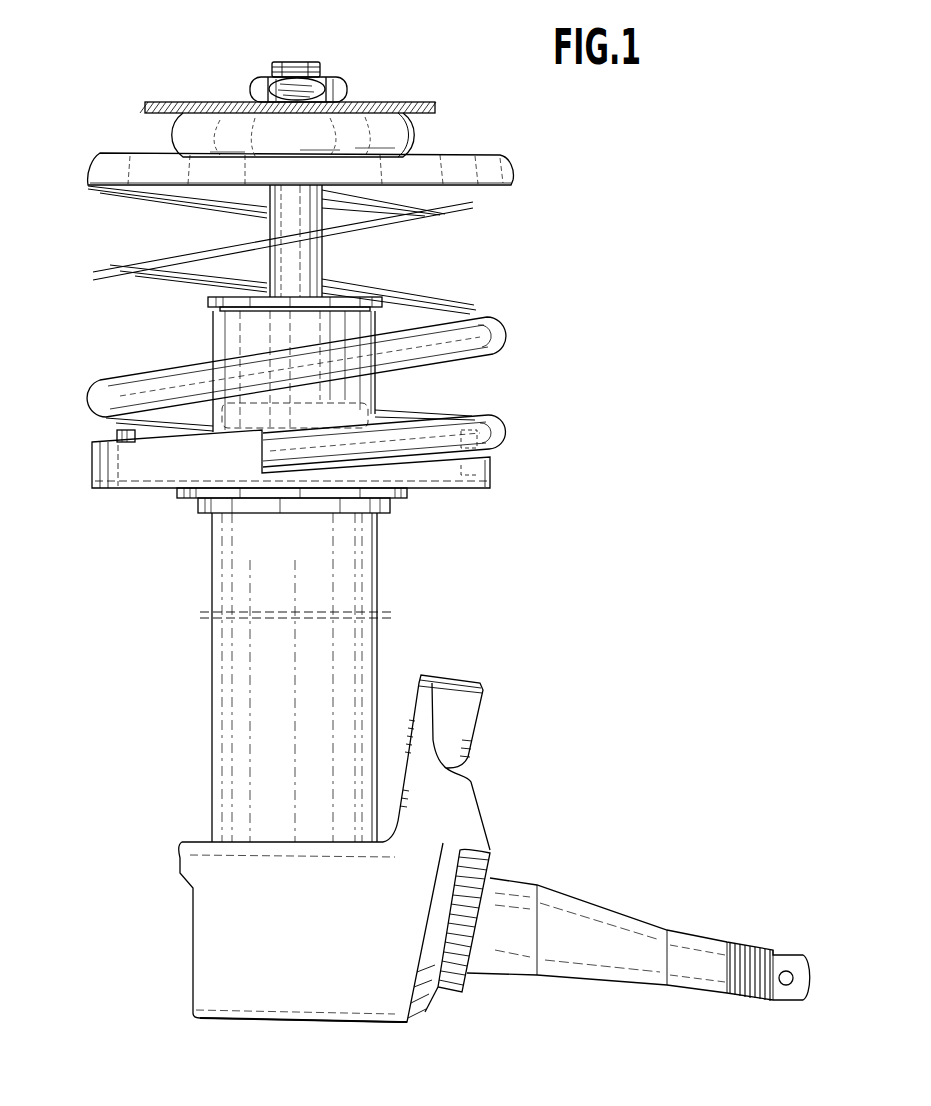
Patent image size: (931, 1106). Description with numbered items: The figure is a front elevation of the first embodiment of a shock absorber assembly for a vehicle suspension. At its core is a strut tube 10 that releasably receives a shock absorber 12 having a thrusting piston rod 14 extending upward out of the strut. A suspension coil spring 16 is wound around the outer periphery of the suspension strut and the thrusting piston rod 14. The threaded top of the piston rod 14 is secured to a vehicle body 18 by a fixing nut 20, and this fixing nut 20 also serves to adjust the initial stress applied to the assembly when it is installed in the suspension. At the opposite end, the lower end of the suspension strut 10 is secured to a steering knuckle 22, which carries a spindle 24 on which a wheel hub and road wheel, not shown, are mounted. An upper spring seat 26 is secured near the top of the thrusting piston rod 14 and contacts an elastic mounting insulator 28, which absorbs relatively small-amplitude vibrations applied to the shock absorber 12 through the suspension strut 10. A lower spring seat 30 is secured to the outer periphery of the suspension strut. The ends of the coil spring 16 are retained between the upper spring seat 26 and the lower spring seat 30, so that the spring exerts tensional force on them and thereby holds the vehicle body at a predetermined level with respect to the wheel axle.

The strut tube 10 is at (212, 720).
The shock absorber 12 is at (363, 570).
The thrusting piston rod 14 is at (323, 258).
The suspension coil spring 16 is at (507, 333).
The vehicle body 18 is at (398, 103).
The fixing nut 20 is at (322, 73).
The steering knuckle 22 is at (427, 857).
The spindle 24 is at (640, 927).
The upper spring seat 26 is at (510, 173).
The elastic mounting insulator 28 is at (417, 140).
The lower spring seat 30 is at (498, 475).